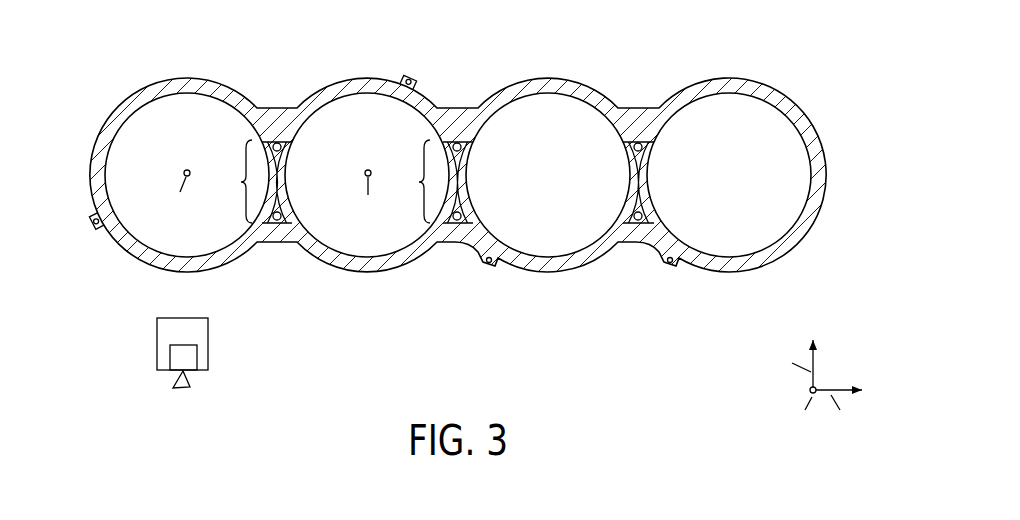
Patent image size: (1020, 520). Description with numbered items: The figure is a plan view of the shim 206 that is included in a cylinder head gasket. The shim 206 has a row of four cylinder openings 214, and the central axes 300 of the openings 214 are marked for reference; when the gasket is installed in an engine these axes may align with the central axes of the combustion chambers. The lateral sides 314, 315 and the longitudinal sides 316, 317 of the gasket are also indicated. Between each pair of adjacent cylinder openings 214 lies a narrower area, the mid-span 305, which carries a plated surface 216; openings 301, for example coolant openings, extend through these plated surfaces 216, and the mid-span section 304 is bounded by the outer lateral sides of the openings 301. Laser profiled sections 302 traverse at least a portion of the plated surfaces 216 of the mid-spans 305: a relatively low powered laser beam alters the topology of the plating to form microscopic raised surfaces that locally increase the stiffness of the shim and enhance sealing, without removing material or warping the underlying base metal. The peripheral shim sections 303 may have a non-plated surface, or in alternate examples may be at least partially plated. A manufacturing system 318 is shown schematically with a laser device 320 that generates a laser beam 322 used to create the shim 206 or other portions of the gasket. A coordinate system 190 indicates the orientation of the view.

The coordinate system 190 is at (845, 370).
The shim 206 is at (879, 55).
The cylinder openings 214 is at (145, 133).
The plated surfaces 216 is at (288, 156).
The central axes 300 is at (277, 196).
The openings 301 is at (280, 146).
The laser profiled sections 302 is at (275, 205).
The peripheral shim sections 303 is at (181, 64).
The mid-span section 304 is at (318, 181).
The mid-spans 305 is at (323, 208).
The lateral side 314 is at (441, 57).
The lateral side 315 is at (449, 303).
The longitudinal side 316 is at (73, 167).
The longitudinal side 317 is at (839, 162).
The manufacturing system 318 is at (209, 349).
The laser device 320 is at (170, 360).
The laser beam 322 is at (192, 378).